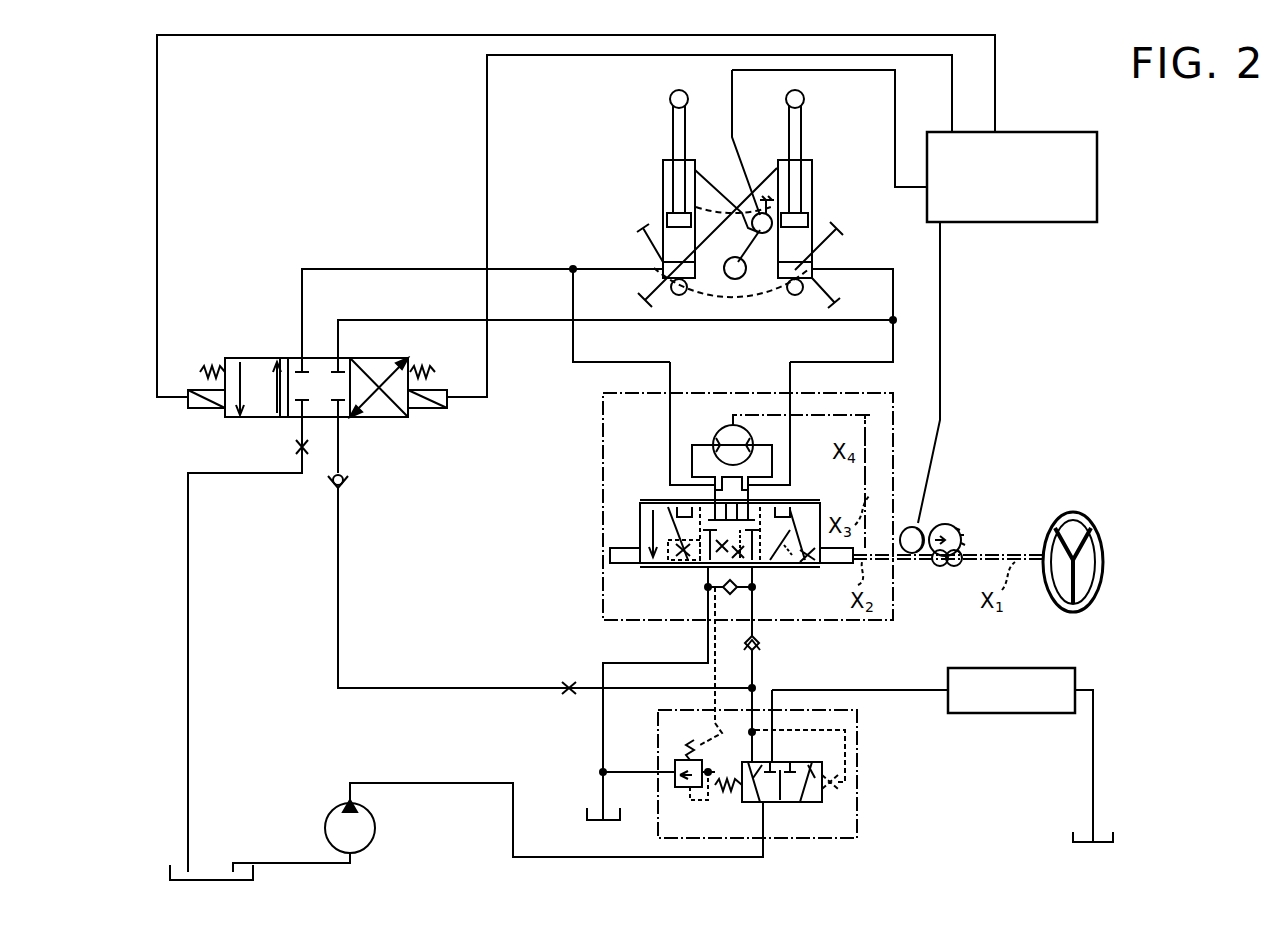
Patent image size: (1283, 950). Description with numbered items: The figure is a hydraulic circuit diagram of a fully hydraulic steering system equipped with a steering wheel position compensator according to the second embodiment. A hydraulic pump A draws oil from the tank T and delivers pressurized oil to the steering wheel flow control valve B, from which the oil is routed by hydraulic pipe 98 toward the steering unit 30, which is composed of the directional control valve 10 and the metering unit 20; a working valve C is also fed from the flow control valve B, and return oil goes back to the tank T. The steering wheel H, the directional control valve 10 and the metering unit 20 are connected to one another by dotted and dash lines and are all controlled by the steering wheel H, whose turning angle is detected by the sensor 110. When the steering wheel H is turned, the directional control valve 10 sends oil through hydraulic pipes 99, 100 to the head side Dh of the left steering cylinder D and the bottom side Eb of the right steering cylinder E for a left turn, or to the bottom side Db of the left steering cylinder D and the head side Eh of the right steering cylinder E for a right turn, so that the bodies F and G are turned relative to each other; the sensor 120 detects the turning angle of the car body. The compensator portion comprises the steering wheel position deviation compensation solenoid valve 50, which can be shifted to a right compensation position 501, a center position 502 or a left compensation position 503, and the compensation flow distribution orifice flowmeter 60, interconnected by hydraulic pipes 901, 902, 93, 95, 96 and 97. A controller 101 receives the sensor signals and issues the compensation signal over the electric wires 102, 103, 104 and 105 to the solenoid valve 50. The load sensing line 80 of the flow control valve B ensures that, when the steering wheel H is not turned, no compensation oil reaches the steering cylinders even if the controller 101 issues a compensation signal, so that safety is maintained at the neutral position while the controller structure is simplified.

The directional control valve 10 is at (640, 512).
The metering unit 20 is at (725, 432).
The steering unit 30 is at (603, 580).
The steering wheel position deviation compensation solenoid valve 50 is at (333, 378).
The right compensation position 501 is at (385, 365).
The second valve position 502 is at (322, 358).
The left compensation position 503 is at (252, 358).
The compensation flow distribution orifice flowmeter 60 is at (573, 698).
The load sensing line 80 is at (715, 722).
The hydraulic pipe 93 is at (188, 608).
The hydraulic pipe 95 is at (403, 320).
The hydraulic pipe 96 is at (358, 268).
The hydraulic pipe 97 is at (587, 818).
The hydraulic pipe 98 is at (760, 668).
The hydraulic pipe 99 is at (641, 362).
The hydraulic pipe 100 is at (893, 342).
The controller 101 is at (1058, 132).
The electric wire 102 is at (940, 275).
The electric wire 103 is at (895, 108).
The electric wire 104 is at (952, 80).
The signal line 105 is at (995, 72).
The steering wheel turning angle sensor 110 is at (935, 520).
The car body turning angle sensor 120 is at (760, 213).
The hydraulic pipe 901 is at (338, 608).
The hydraulic pipe 902 is at (338, 458).
The hydraulic pump A is at (325, 820).
The steering flow control valve B is at (857, 803).
The working valve C is at (1018, 713).
The left steering cylinder D is at (632, 192).
The head side of left steering cylinder Dh is at (667, 192).
The bottom side of left steering cylinder Db is at (632, 250).
The right steering cylinder E is at (833, 192).
The head side of right steering cylinder Eh is at (812, 192).
The bottom side of right steering cylinder Eb is at (812, 265).
The body F is at (640, 228).
The body G is at (645, 300).
The steering wheel H is at (1085, 515).
The tank T is at (165, 870).